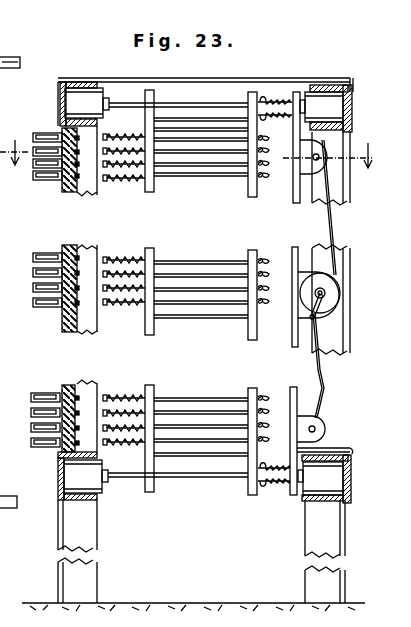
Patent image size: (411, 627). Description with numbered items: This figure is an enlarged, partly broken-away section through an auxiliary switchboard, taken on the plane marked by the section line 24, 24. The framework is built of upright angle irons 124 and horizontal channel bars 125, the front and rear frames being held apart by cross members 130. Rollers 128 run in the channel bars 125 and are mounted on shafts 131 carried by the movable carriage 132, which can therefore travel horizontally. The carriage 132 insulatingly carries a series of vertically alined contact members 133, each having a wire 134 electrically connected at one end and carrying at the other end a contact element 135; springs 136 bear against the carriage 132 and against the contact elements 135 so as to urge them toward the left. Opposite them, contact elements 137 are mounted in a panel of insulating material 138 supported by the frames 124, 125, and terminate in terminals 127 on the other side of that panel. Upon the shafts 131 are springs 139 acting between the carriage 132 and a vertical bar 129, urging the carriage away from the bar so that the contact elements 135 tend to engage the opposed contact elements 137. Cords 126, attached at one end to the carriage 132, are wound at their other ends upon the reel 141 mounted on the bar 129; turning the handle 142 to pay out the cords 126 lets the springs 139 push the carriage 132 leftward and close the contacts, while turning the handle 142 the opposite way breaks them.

The section line 24— 24 is at (191, 167).
The angle irons 124 is at (78, 534).
The channel bars 125 is at (60, 103).
The cords 126 is at (331, 247).
The terminals 127 is at (56, 170).
The rollers 128 is at (87, 100).
The vertical bar 129 is at (293, 392).
The cross members 130 is at (172, 80).
The shafts 131 is at (133, 103).
The movable carriage 132 is at (157, 252).
The contact members 133 is at (207, 170).
The wire 134 is at (269, 257).
The contact element 135 is at (133, 181).
The springs 136 is at (152, 186).
The contact elements 137 is at (128, 258).
The panel of insulating material 138 is at (76, 246).
The springs 139 is at (270, 95).
The reel 141 is at (338, 310).
The handle 142 is at (312, 312).